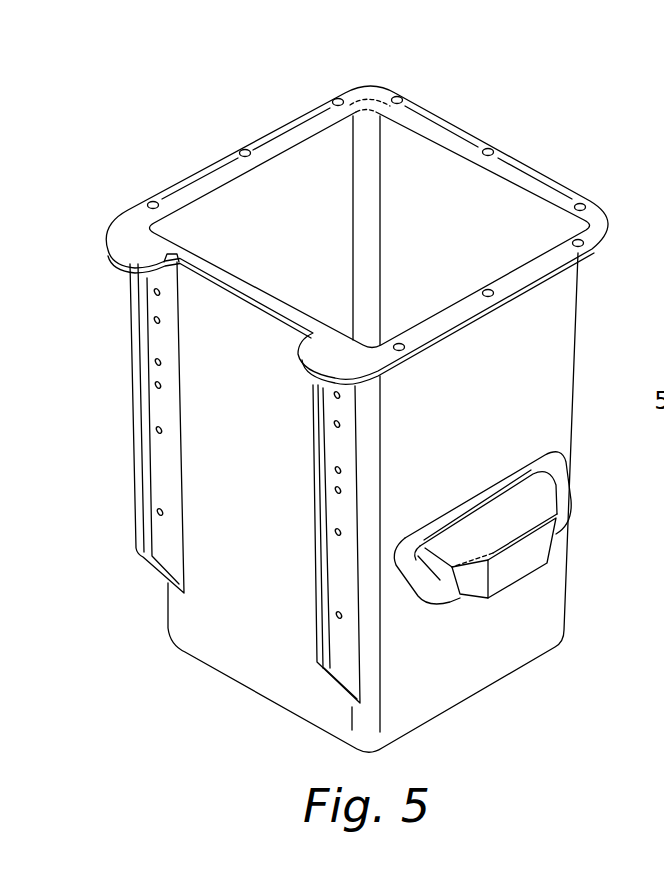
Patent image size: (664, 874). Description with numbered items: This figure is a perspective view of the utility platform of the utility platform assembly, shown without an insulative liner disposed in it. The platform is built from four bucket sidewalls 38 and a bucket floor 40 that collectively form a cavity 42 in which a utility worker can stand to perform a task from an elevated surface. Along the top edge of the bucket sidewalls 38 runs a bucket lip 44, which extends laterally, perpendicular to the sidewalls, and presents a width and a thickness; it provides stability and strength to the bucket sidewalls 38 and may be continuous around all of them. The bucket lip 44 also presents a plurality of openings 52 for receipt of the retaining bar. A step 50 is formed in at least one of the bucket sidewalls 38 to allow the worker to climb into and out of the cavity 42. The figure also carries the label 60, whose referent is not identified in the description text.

The bucket sidewalls 38 is at (288, 177).
The bucket floor 40 is at (480, 728).
The cavity 42 is at (367, 173).
The bucket lip 44 is at (128, 236).
The step 50 is at (547, 502).
The openings 52 is at (336, 99).
The wall feature 60 is at (650, 301).